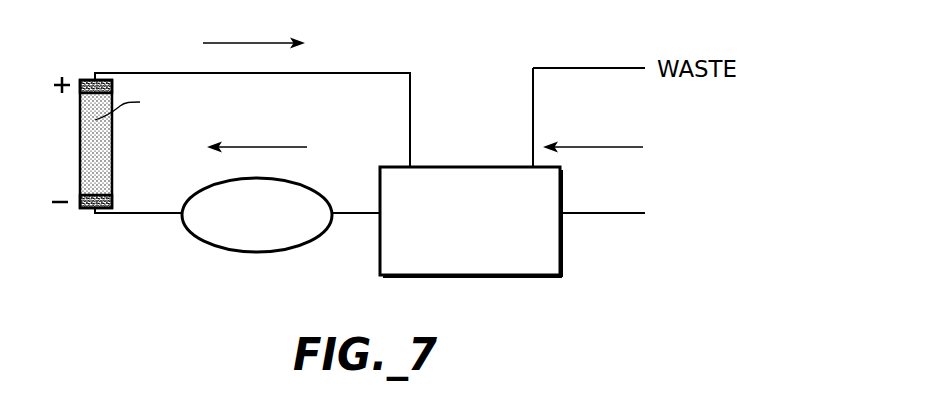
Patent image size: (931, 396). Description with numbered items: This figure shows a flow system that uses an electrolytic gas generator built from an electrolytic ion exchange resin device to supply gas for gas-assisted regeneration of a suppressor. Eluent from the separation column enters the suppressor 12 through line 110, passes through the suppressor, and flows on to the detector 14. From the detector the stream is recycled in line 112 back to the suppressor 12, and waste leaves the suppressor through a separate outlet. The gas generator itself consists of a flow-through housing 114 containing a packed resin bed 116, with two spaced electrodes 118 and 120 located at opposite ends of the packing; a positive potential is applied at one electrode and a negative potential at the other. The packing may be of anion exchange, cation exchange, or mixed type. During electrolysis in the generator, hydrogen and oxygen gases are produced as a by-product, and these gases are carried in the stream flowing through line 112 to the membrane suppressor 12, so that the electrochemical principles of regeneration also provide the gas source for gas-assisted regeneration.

The suppressor 12 is at (442, 167).
The detector 14 is at (255, 252).
The eluent inlet line 110 is at (575, 213).
The recycle line 112 is at (333, 73).
The flow-through housing 114 is at (112, 147).
The packed resin bed 116 is at (136, 107).
The electrode 118 is at (112, 195).
The electrode 120 is at (85, 78).